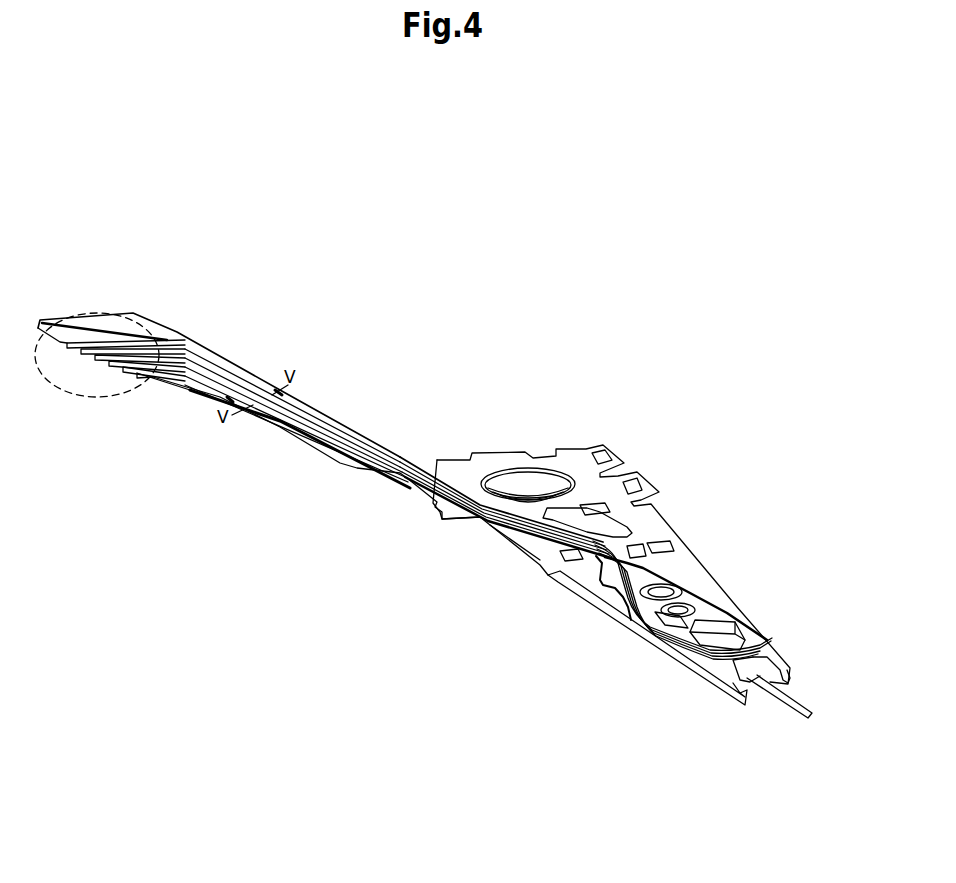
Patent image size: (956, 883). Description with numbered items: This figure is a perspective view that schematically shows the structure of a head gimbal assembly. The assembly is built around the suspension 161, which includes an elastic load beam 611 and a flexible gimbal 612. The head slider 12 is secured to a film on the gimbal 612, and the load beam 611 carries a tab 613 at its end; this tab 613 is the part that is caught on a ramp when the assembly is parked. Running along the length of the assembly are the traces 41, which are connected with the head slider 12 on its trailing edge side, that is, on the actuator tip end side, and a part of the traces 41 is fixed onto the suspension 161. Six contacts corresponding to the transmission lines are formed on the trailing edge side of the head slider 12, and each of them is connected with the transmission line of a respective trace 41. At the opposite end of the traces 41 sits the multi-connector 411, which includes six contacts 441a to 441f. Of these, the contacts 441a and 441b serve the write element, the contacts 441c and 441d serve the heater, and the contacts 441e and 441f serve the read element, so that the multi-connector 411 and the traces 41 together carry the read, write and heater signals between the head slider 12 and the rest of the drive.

The head slider 12 is at (693, 660).
The traces 41 is at (323, 418).
The suspension 161 is at (679, 499).
The multi-connector 411 is at (130, 360).
The contact 441a is at (142, 370).
The contact 441b is at (127, 370).
The contact 441c is at (104, 362).
The contact 441d is at (90, 357).
The contact 441e is at (70, 343).
The contact 441f is at (130, 315).
The load beam 611 is at (700, 568).
The gimbal 612 is at (737, 605).
The tab 613 is at (803, 715).